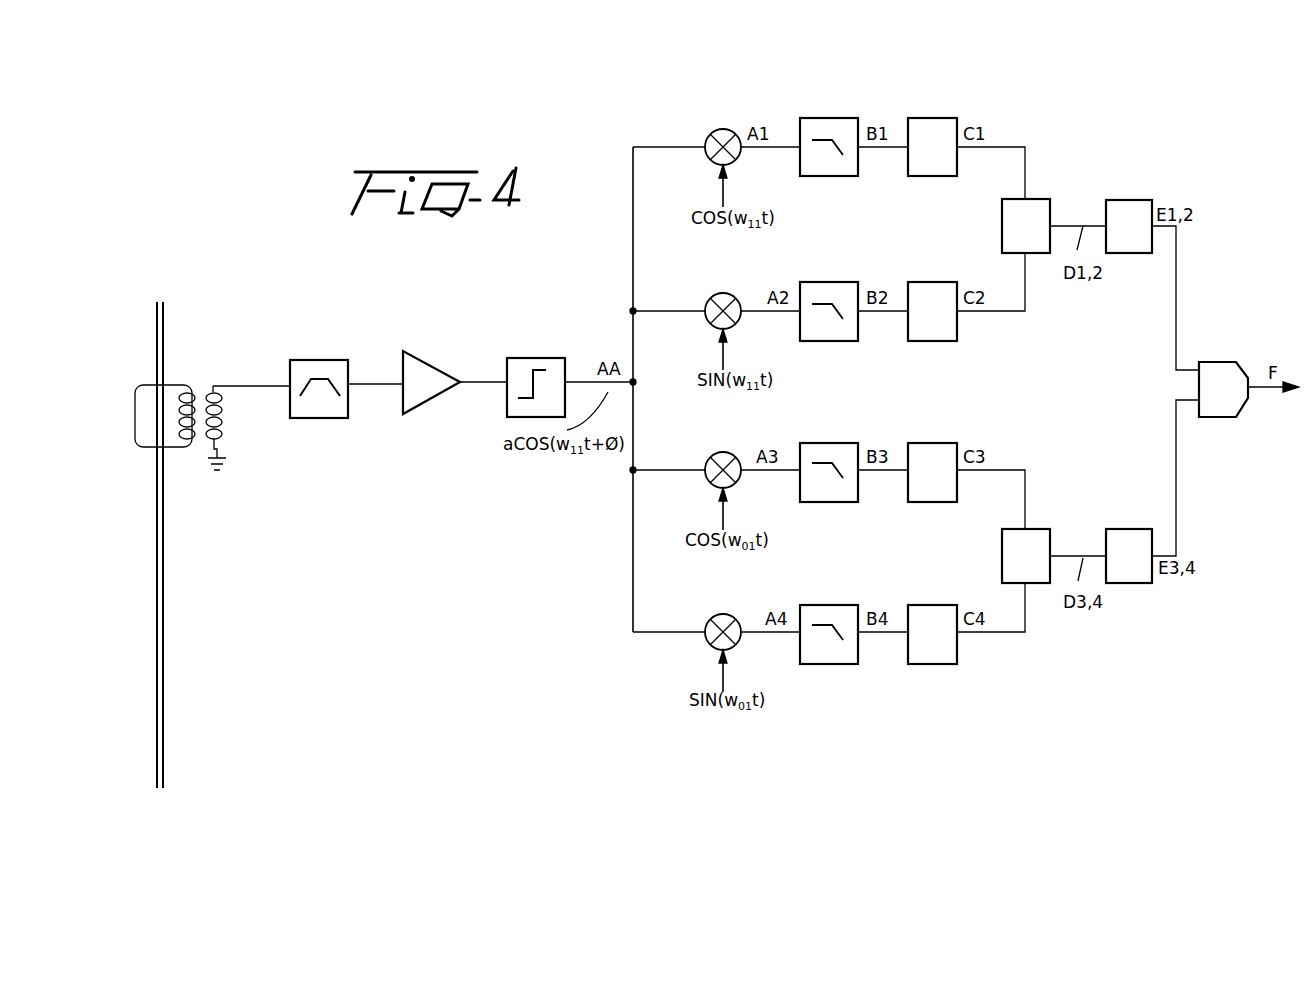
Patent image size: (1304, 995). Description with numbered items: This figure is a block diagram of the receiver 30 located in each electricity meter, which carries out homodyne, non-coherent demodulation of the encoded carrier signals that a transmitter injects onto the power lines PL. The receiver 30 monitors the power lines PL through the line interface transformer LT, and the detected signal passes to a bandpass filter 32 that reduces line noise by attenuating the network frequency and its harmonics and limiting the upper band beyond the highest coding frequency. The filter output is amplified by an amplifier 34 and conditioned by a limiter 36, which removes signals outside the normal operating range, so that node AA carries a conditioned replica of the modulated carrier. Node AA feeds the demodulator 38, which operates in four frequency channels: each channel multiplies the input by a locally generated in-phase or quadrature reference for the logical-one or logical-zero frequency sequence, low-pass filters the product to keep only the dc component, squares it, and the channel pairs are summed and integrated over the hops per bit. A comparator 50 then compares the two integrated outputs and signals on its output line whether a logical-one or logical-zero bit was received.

The power lines PL is at (172, 540).
The line interface transformer LT is at (208, 372).
The receiver 30 is at (604, 548).
The bandpass filter 32 is at (313, 364).
The amplifier 34 is at (420, 363).
The limiter 36 is at (538, 362).
The demodulator 38 is at (815, 94).
The comparator 50 is at (1220, 366).